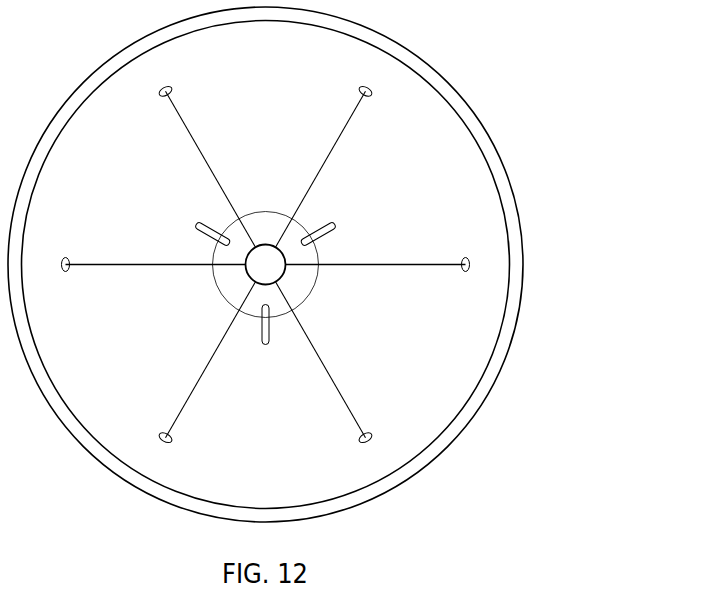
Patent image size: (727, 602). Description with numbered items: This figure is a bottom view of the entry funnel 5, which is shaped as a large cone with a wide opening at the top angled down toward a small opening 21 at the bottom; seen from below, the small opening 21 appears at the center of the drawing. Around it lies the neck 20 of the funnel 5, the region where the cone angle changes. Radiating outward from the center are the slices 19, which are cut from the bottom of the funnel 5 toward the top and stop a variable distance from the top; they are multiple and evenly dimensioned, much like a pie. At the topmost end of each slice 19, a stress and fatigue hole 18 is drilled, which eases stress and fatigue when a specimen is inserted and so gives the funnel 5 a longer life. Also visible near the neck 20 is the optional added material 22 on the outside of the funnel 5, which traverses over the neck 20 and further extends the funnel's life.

The funnel 5 is at (321, 264).
The stress and fatigue holes 18 is at (340, 264).
The slices 19 is at (266, 265).
The neck 20 is at (198, 281).
The small opening 21 is at (324, 230).
The added material 22 is at (198, 223).